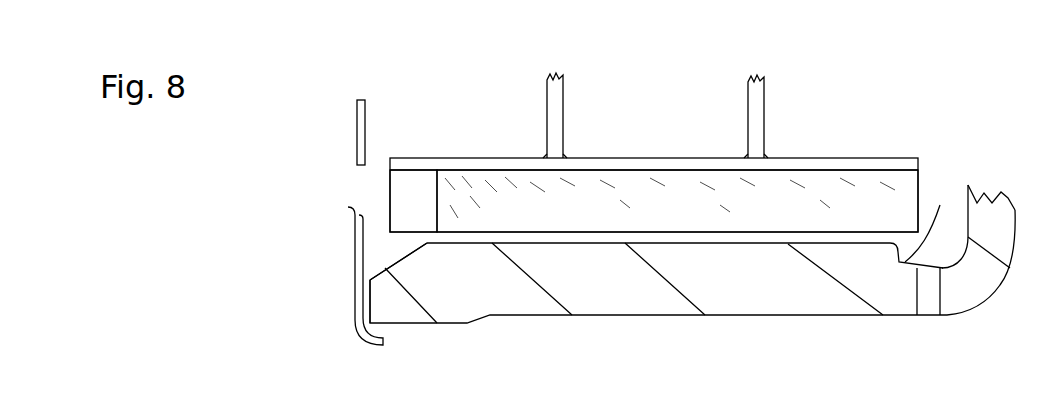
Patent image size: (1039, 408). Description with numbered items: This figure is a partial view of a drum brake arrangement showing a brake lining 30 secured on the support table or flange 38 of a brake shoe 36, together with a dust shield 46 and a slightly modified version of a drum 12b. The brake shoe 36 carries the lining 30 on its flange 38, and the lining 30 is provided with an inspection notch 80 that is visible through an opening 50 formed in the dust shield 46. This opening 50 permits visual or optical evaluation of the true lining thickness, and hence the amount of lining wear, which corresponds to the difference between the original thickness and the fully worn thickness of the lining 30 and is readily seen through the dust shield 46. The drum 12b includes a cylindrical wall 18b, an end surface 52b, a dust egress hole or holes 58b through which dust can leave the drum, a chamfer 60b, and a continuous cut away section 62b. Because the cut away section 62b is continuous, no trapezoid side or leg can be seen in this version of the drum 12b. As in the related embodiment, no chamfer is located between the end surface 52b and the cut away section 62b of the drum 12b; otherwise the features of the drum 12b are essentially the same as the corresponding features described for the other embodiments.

The brake lining 30 is at (812, 202).
The support table or flange 38 is at (480, 162).
The brake shoe 36 is at (556, 122).
The dust shield 46 is at (355, 128).
The inspection notch 80 is at (407, 200).
The opening 50 is at (348, 207).
The continuous cut away section 62b is at (403, 257).
The end surface 52b is at (372, 300).
The drum 12b is at (603, 280).
The cylindrical wall 18b is at (750, 295).
The dust egress hole 58b is at (925, 297).
The chamfer 60b is at (940, 205).